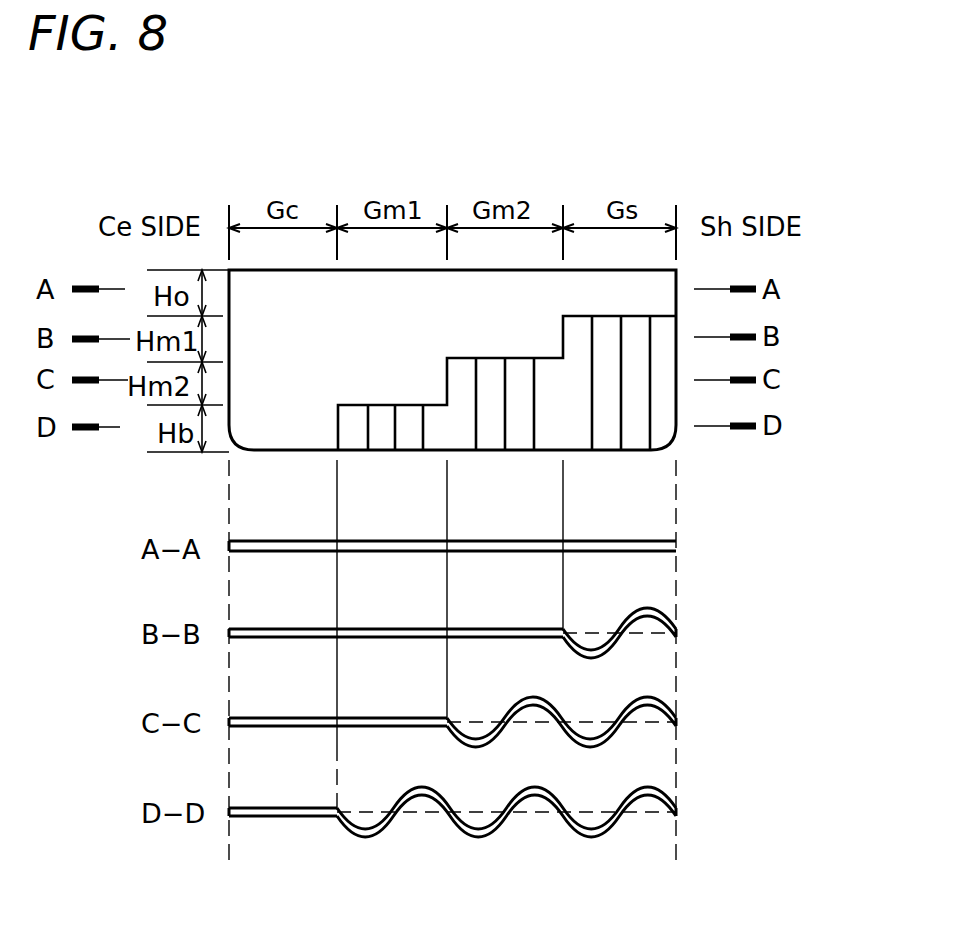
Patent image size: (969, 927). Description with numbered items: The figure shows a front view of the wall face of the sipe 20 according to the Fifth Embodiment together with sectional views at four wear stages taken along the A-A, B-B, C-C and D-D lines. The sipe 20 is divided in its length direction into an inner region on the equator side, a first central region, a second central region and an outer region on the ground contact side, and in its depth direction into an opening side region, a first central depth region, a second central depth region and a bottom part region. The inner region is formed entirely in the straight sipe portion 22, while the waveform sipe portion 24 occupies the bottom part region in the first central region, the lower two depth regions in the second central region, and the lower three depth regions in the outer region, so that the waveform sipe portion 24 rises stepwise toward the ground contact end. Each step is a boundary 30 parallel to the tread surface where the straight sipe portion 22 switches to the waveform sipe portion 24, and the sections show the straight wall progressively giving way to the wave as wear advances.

The sipe 20 is at (470, 163).
The straight sipe portion 22 is at (260, 414).
The waveform sipe portion 24 is at (631, 435).
The boundary 30 is at (402, 403).